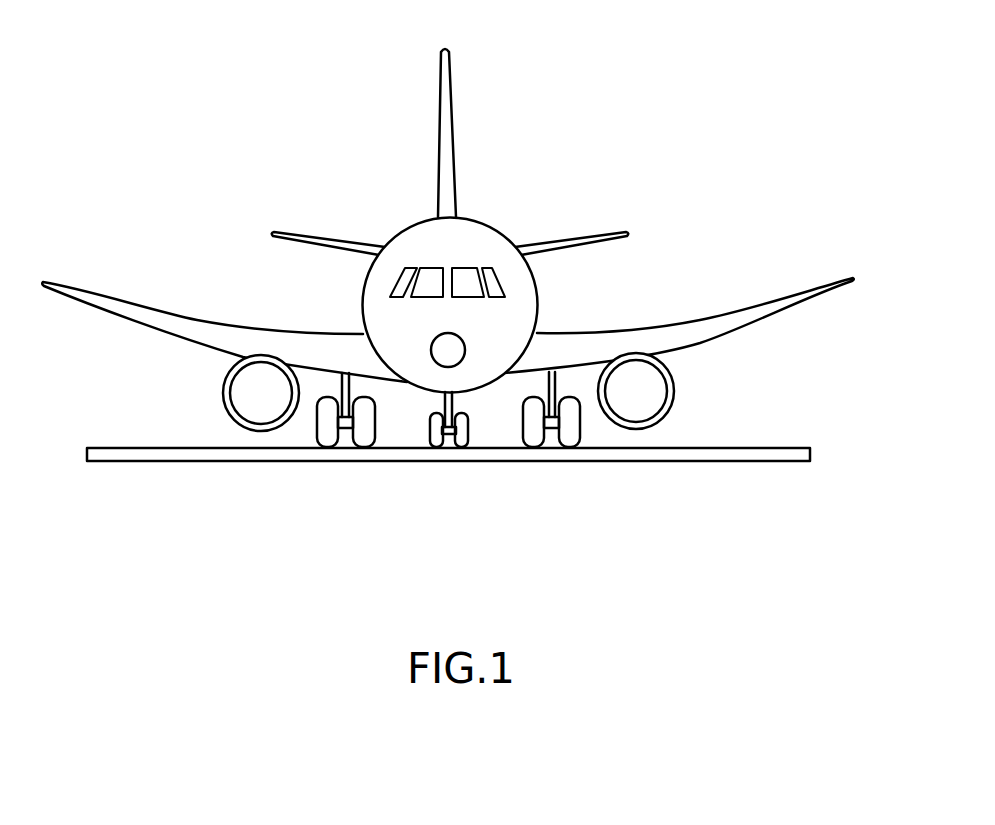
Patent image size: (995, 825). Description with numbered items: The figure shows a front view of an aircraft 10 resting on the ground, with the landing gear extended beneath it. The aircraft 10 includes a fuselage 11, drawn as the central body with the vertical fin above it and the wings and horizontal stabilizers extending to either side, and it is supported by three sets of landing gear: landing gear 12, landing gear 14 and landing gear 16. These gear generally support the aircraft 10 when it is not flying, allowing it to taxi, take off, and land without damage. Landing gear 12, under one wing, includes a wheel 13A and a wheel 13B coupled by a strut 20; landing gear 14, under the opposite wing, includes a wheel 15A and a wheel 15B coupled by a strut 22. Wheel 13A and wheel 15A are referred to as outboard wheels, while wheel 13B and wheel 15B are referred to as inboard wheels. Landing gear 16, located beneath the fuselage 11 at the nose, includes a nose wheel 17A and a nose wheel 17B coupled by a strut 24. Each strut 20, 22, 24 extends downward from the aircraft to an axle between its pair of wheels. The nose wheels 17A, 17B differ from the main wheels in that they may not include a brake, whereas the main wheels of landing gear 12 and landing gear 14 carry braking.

The aircraft 10 is at (288, 125).
The fuselage 11 is at (363, 311).
The landing gear 12 is at (600, 437).
The wheel 13A is at (583, 441).
The wheel 13B is at (482, 406).
The landing gear 14 is at (297, 433).
The wheel 15A is at (316, 438).
The wheel 15B is at (380, 441).
The landing gear 16 is at (540, 396).
The nose wheel 17A is at (470, 441).
The nose wheel 17B is at (432, 441).
The strut 20 is at (546, 441).
The strut 22 is at (330, 441).
The strut 24 is at (448, 436).